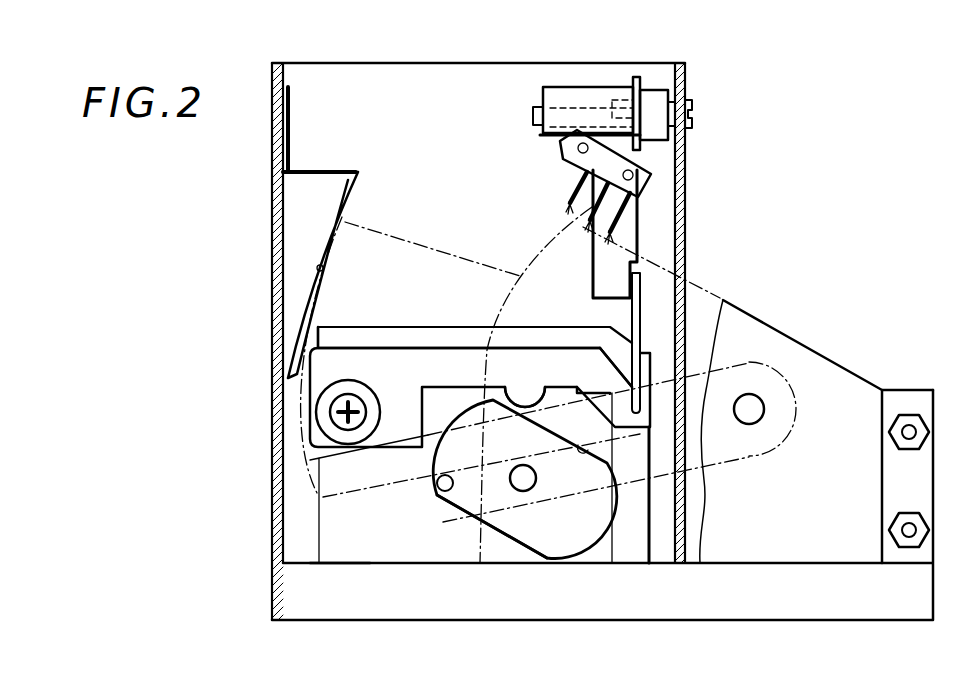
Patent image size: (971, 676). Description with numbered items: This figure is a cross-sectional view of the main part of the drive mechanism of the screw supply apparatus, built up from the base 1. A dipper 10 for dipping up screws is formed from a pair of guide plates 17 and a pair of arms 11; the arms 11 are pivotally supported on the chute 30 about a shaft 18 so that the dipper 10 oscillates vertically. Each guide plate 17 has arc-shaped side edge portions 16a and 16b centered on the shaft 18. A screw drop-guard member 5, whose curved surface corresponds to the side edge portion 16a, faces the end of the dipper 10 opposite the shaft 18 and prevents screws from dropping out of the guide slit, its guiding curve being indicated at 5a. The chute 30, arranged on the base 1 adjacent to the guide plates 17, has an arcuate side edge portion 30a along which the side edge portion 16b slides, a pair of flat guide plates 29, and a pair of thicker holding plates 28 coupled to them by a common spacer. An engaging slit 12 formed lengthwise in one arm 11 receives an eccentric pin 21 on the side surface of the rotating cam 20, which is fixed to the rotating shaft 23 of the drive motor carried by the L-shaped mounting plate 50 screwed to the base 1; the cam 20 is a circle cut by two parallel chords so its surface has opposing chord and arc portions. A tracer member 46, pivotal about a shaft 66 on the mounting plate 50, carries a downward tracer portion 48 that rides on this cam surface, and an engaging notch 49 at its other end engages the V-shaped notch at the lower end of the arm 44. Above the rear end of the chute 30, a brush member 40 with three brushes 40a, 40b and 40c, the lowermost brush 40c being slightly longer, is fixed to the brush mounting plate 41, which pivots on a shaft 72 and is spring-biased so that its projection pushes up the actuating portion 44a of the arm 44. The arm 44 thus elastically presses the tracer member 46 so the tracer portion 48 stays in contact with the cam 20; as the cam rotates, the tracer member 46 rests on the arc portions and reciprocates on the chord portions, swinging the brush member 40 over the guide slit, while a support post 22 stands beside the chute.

The base 1 is at (830, 603).
The screw drop-guard member 5 is at (342, 201).
The paper guide path 5a is at (318, 270).
The dipper 10 is at (318, 313).
The arms 11 is at (368, 480).
The engaging slit 12 is at (525, 492).
The side edge portion 16a is at (310, 420).
The side edge portion 16b is at (520, 277).
The guide plates 17 is at (428, 246).
The shaft 18 is at (752, 412).
The rotating cam 20 is at (578, 548).
The eccentric pin 21 is at (438, 488).
The support post 22 is at (602, 455).
The rotating shaft 23 is at (567, 540).
The holding plates 28 is at (917, 407).
The guide plates 29 is at (790, 340).
The chute 30 is at (827, 375).
The side edge portion 30a is at (538, 246).
The brush member 40 is at (641, 163).
The brush 40a is at (572, 192).
The brush 40b is at (588, 212).
The brush 40c is at (638, 208).
The brush mounting plate 41 is at (565, 97).
The arm 44 is at (626, 287).
The actuating portion 44a is at (628, 87).
The tracer member 46 is at (318, 360).
The tracer portion 48 is at (518, 402).
The engaging notch 49 is at (624, 402).
The L-shaped mounting plate 50 is at (338, 557).
The shaft 66 is at (345, 410).
The shaft 72 is at (585, 108).